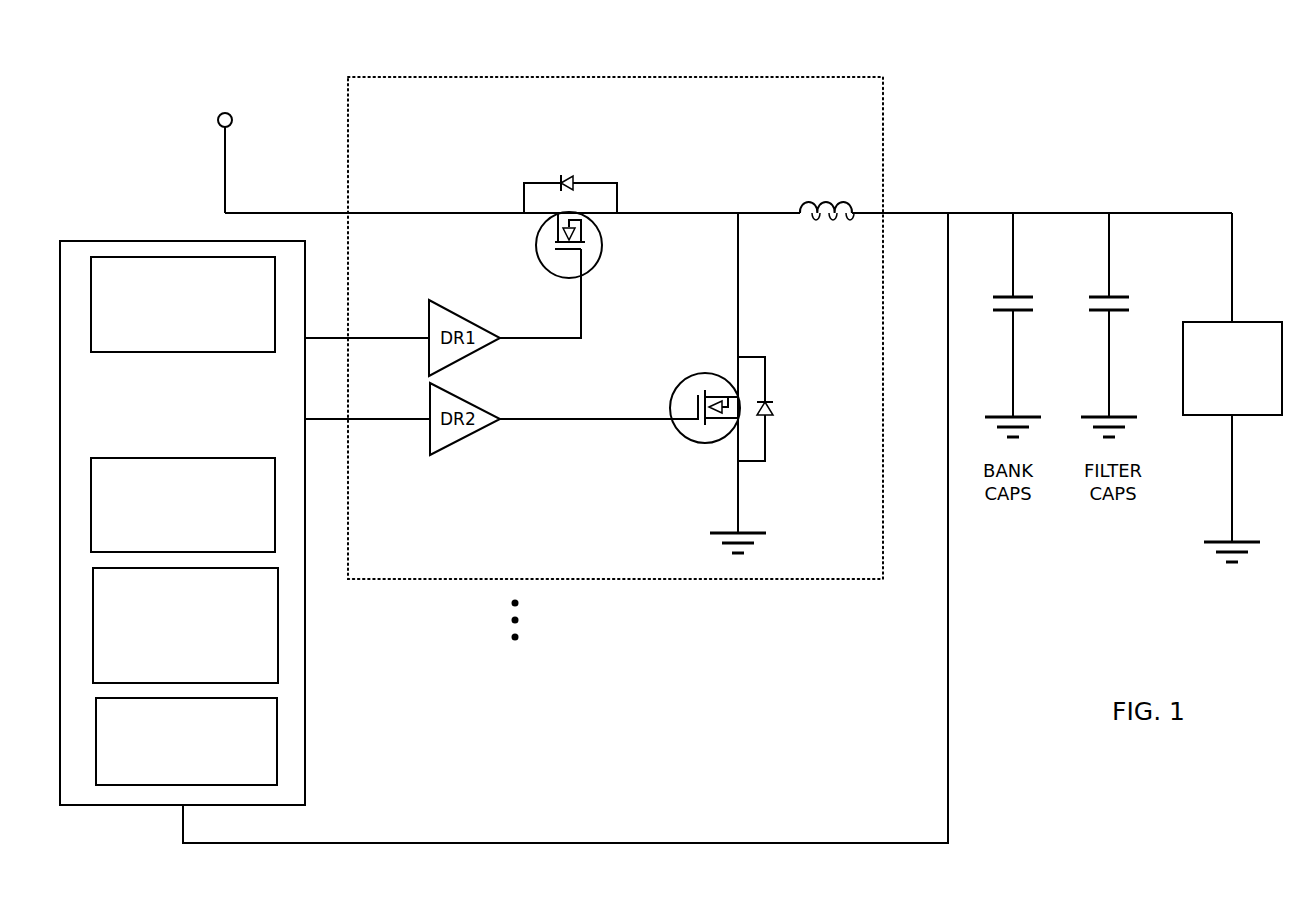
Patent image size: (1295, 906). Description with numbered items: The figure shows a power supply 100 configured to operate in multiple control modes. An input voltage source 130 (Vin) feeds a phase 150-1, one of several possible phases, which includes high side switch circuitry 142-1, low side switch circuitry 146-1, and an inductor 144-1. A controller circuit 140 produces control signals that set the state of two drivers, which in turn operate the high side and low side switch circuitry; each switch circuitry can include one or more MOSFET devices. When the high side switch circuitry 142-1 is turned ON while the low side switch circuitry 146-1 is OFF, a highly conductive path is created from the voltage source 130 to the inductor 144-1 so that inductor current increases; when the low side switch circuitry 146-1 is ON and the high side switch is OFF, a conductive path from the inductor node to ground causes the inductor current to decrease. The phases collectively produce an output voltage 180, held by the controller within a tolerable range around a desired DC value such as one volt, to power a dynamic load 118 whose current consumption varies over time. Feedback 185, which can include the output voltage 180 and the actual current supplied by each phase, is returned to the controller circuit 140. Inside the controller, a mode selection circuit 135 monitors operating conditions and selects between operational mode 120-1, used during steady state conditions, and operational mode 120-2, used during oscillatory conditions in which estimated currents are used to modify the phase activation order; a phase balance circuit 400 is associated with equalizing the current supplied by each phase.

The power supply 100 is at (728, 120).
The voltage source 130 is at (221, 88).
The controller circuit 140 is at (245, 523).
The operational mode 120-1 is at (183, 304).
The operational mode 120-2 is at (183, 505).
The mode selection circuit 135 is at (185, 625).
The phase balance circuit 400 is at (186, 741).
The phase 150-1 is at (765, 583).
The high side switch circuitry 142-1 is at (622, 150).
The inductor 144-1 is at (826, 197).
The low side switch circuitry 146-1 is at (684, 458).
The output voltage 180 is at (1068, 210).
The dynamic load 118 is at (1232, 442).
The feedback 185 is at (863, 848).